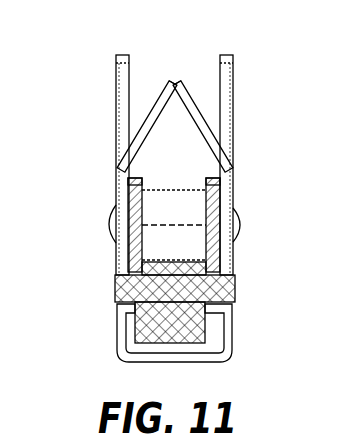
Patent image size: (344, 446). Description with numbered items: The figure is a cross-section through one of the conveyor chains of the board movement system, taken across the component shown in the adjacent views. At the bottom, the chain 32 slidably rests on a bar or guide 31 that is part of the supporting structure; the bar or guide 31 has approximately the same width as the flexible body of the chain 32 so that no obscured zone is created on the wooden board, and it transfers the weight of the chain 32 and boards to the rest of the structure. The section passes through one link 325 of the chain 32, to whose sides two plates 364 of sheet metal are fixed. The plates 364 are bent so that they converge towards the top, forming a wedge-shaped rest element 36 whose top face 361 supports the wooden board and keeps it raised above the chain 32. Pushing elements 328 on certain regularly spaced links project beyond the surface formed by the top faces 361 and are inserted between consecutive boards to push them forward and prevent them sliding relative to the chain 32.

The bar or guide 31 is at (198, 283).
The chain or belt 32 is at (265, 194).
The rest element 36 is at (217, 113).
The top face 361 is at (176, 72).
The pushing element 328 is at (228, 100).
The plate 364 is at (228, 186).
The link 325 is at (131, 220).